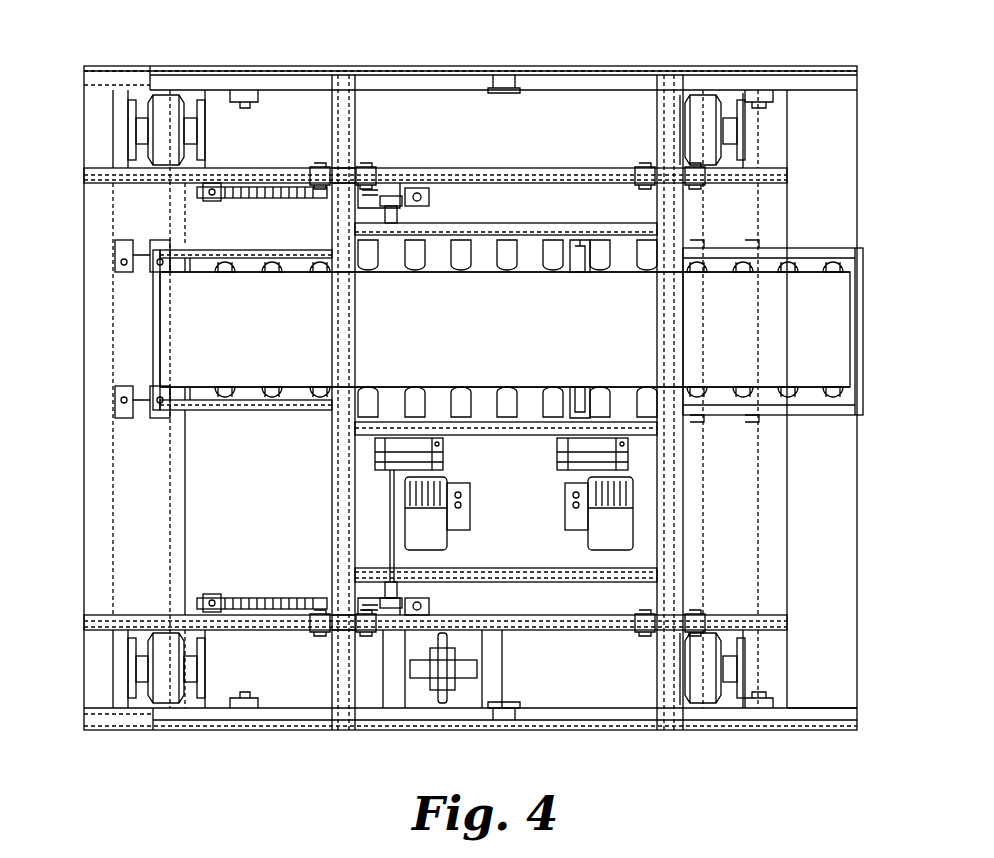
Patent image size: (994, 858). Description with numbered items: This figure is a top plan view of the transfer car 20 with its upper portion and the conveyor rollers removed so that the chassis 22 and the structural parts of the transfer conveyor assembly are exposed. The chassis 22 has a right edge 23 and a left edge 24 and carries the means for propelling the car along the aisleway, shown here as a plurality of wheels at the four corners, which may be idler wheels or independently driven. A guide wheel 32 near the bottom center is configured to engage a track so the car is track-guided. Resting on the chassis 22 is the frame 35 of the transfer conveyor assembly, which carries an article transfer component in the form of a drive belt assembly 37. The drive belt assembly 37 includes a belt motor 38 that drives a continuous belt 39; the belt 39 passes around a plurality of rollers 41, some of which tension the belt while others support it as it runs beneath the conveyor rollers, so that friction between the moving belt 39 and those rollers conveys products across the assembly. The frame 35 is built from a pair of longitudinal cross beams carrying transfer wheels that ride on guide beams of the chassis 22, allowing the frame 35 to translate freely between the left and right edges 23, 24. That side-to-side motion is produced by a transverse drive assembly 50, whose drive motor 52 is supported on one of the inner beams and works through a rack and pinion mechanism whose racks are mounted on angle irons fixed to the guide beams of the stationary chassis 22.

The transfer car 20 is at (472, 67).
The chassis 22 is at (780, 510).
The right edge 23 is at (790, 570).
The left edge 24 is at (84, 594).
The guide wheel 32 is at (440, 682).
The frame 35 is at (815, 700).
The drive belt assembly 37 is at (818, 247).
The belt motor 38 is at (606, 540).
The continuous belt 39 is at (726, 332).
The rollers 41 is at (425, 245).
The transverse drive assembly 50 is at (372, 465).
The drive motor 52 is at (415, 530).